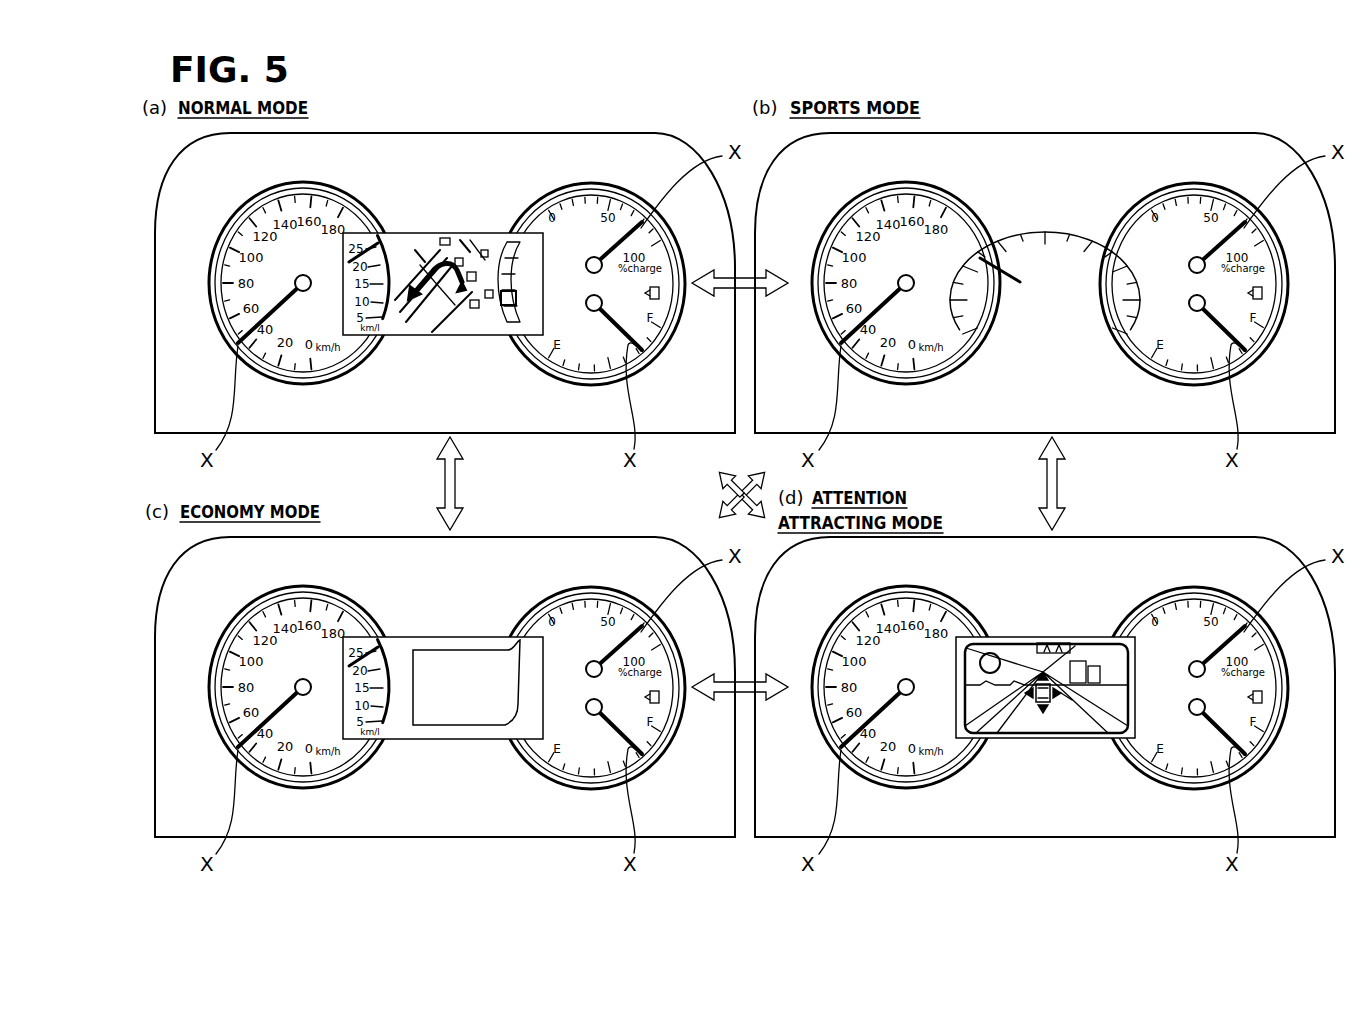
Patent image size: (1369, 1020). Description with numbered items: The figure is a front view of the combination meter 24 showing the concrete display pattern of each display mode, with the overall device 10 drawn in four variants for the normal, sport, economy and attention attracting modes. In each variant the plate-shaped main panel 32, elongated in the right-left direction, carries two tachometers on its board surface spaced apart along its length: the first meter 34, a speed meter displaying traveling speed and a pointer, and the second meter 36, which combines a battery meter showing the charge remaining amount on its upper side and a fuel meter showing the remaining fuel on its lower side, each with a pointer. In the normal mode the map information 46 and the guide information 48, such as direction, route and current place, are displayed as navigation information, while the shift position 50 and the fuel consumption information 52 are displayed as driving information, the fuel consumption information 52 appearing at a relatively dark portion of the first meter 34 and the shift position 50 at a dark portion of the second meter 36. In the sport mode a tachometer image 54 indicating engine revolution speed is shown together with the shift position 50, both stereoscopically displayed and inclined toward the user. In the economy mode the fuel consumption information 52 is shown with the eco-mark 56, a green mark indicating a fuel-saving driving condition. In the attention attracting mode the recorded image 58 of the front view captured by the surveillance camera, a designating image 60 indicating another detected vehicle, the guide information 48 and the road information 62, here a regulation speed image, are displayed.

The vehicle display device 10 is at (682, 115).
The combination meter 24 is at (1148, 537).
The main panel 32 is at (1283, 826).
The first meter 34 is at (940, 640).
The second meter 36 is at (1204, 600).
The map information 46 is at (476, 240).
The guide information 48 is at (1104, 655).
The shift position 50 is at (1048, 282).
The fuel consumption information 52 is at (386, 724).
The tachometer image 54 is at (1045, 214).
The eco-mark 56 is at (466, 612).
The recorded image 58 is at (1046, 719).
The designating image 60 is at (1062, 727).
The road information 62 is at (993, 586).